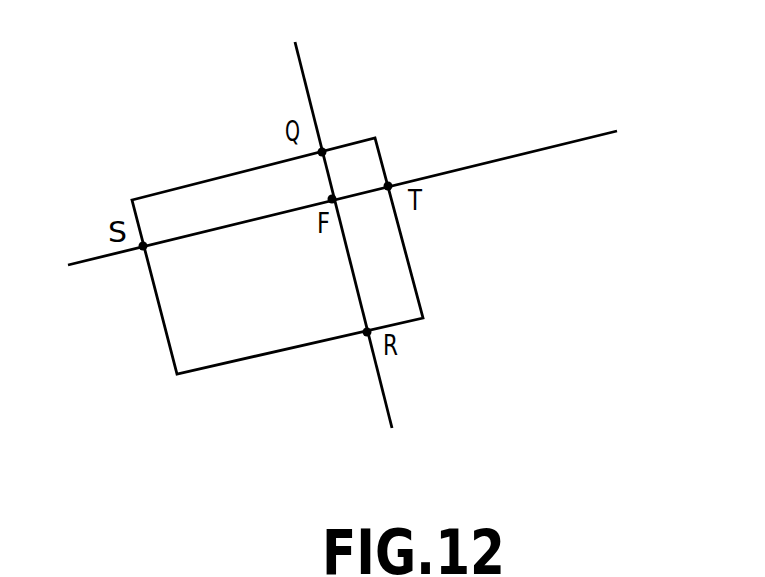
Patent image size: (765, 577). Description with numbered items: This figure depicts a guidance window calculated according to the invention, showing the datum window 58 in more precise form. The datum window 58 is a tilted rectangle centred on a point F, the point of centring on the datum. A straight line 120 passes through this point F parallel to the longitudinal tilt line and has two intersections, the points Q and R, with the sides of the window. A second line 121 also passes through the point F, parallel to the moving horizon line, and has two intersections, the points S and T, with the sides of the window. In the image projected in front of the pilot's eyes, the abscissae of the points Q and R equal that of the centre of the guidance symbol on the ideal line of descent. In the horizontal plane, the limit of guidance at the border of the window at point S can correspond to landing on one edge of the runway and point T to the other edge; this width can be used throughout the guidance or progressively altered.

The datum window 58 is at (168, 343).
The straight line 120 is at (386, 398).
The line 121 is at (555, 146).